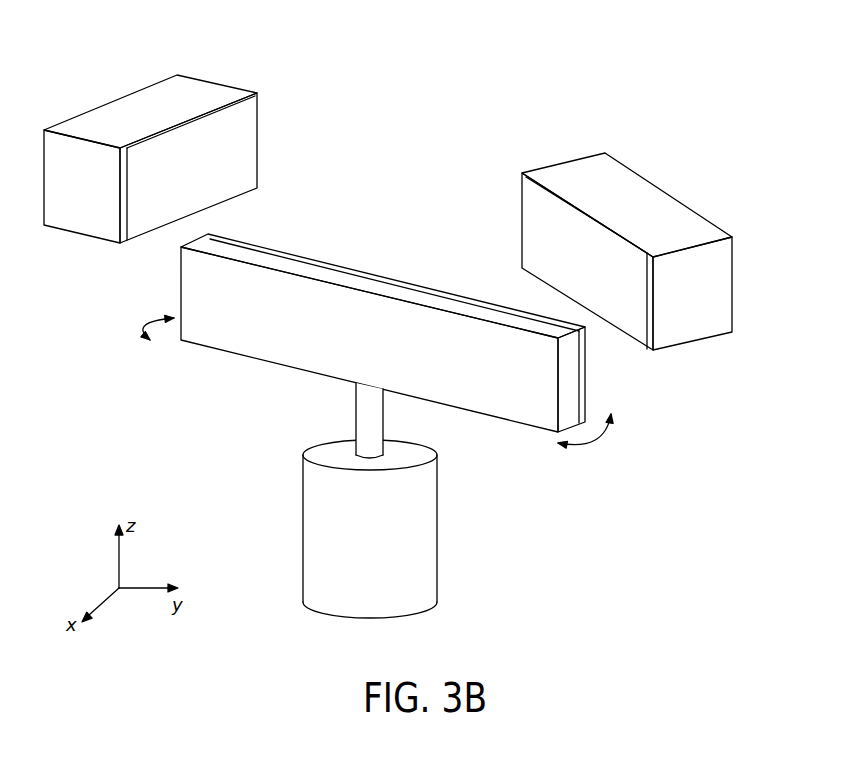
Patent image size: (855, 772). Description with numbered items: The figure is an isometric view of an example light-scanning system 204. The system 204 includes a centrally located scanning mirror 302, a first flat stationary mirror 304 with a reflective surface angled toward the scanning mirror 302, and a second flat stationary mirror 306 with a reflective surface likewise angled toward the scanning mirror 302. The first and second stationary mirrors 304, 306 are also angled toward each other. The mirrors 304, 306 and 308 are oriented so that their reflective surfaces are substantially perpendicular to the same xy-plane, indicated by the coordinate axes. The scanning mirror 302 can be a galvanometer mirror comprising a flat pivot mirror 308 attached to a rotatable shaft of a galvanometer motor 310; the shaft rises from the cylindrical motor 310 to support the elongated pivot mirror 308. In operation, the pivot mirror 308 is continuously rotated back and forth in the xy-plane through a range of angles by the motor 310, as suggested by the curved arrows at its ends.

The light-scanning system 204 is at (686, 78).
The scanning mirror 302 is at (239, 460).
The first flat stationary mirror 304 is at (67, 220).
The second flat stationary mirror 306 is at (718, 297).
The flat pivot mirror 308 is at (513, 409).
The galvanometer motor 310 is at (428, 570).